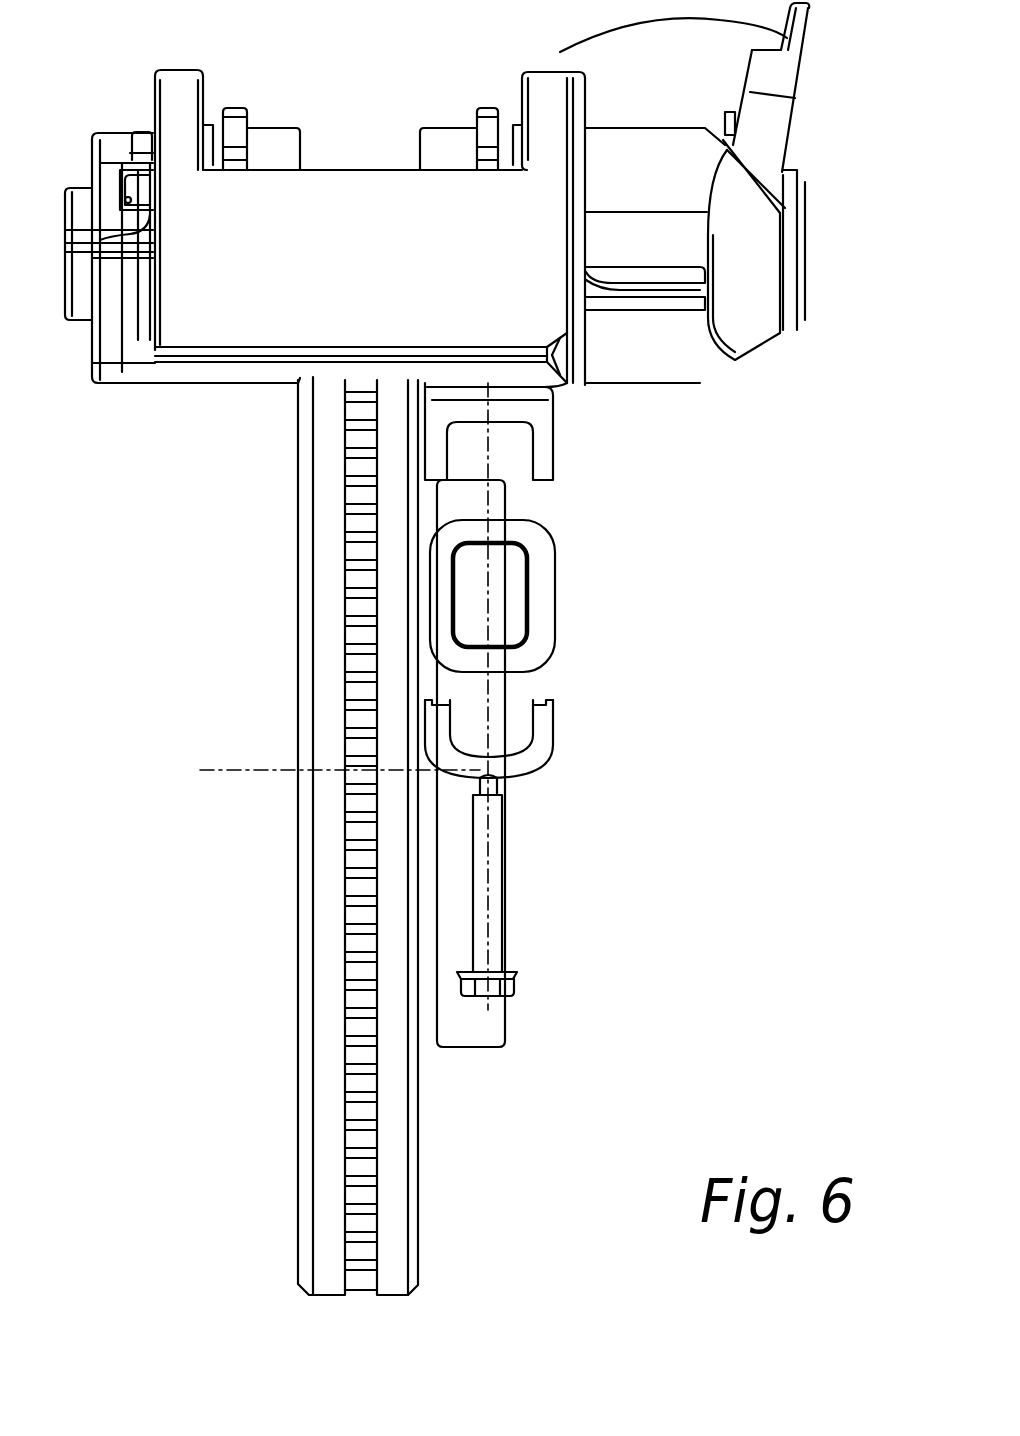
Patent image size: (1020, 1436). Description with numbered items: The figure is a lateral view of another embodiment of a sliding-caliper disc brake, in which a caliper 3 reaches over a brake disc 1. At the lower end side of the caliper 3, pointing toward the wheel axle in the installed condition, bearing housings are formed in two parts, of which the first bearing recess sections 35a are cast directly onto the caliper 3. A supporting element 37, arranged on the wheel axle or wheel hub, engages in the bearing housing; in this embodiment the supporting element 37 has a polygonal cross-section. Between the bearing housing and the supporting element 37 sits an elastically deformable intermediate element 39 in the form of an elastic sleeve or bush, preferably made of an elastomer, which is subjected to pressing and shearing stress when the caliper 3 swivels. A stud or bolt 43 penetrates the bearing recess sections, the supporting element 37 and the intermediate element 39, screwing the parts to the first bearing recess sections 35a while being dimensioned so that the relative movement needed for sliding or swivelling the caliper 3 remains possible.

The brake disc 1 is at (345, 947).
The caliper 3 is at (682, 346).
The first bearing recess sections 35a is at (537, 442).
The supporting elements 37 is at (505, 568).
The elastically deformable intermediate element 39 is at (560, 620).
The bolts 43 is at (495, 920).